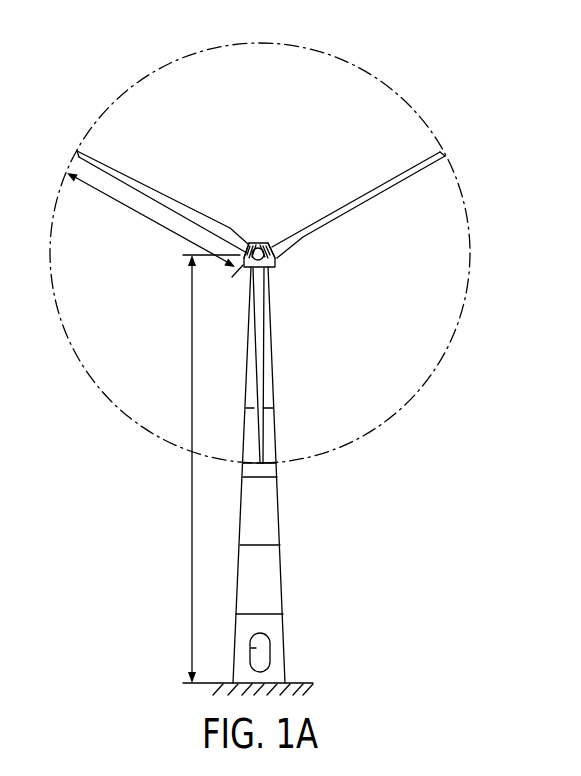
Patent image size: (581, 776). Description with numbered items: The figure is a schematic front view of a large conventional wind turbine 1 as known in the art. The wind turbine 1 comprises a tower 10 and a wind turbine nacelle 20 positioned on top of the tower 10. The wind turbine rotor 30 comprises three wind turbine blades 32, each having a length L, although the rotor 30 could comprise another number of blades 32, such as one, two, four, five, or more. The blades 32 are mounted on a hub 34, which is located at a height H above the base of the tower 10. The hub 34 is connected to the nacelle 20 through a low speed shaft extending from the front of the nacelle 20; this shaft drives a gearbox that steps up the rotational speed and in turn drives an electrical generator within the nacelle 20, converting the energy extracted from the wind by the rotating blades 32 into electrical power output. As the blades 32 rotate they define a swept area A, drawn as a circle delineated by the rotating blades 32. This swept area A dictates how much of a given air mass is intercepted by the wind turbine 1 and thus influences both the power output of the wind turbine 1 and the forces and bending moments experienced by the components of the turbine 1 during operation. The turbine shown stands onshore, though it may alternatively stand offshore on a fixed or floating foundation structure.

The wind turbine 1 is at (396, 62).
The tower 10 is at (278, 514).
The wind turbine nacelle 20 is at (278, 262).
The wind turbine rotor 30 is at (88, 146).
The wind turbine blade 32 is at (395, 185).
The hub 34 is at (255, 244).
The swept area A is at (383, 438).
The height H is at (208, 469).
The length L is at (155, 225).